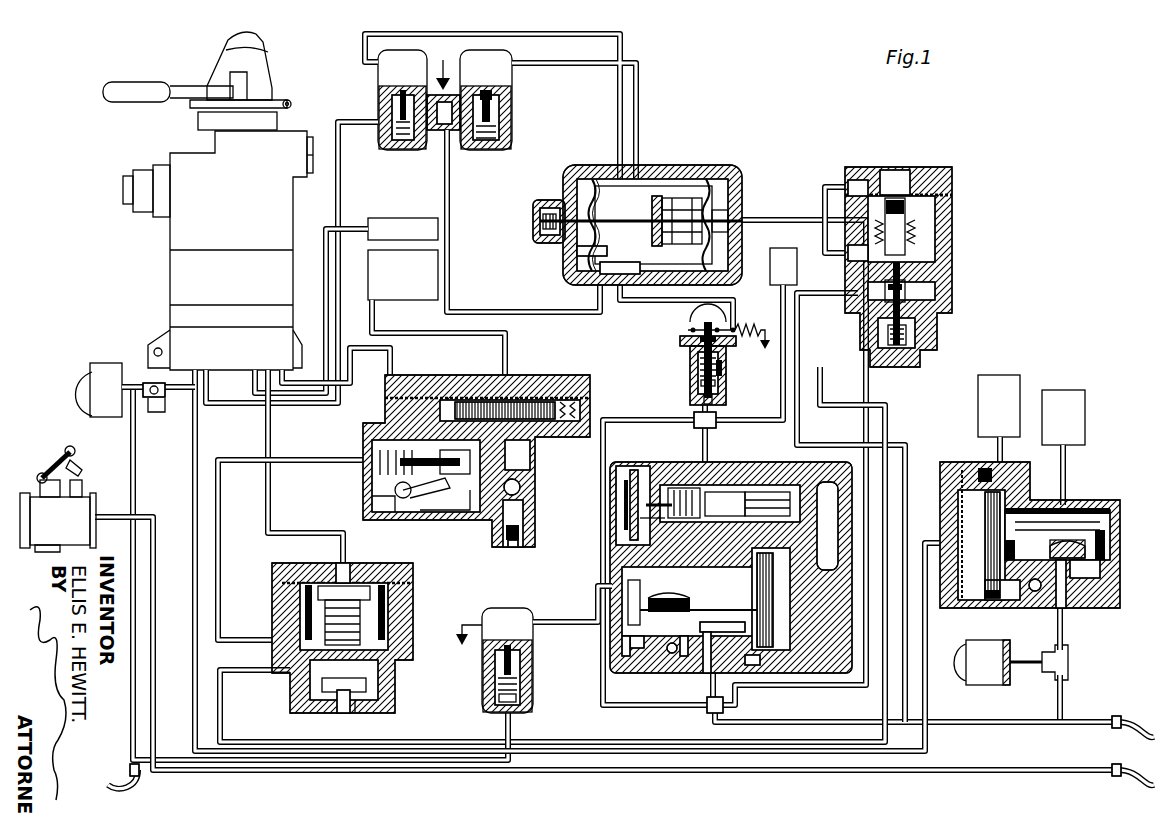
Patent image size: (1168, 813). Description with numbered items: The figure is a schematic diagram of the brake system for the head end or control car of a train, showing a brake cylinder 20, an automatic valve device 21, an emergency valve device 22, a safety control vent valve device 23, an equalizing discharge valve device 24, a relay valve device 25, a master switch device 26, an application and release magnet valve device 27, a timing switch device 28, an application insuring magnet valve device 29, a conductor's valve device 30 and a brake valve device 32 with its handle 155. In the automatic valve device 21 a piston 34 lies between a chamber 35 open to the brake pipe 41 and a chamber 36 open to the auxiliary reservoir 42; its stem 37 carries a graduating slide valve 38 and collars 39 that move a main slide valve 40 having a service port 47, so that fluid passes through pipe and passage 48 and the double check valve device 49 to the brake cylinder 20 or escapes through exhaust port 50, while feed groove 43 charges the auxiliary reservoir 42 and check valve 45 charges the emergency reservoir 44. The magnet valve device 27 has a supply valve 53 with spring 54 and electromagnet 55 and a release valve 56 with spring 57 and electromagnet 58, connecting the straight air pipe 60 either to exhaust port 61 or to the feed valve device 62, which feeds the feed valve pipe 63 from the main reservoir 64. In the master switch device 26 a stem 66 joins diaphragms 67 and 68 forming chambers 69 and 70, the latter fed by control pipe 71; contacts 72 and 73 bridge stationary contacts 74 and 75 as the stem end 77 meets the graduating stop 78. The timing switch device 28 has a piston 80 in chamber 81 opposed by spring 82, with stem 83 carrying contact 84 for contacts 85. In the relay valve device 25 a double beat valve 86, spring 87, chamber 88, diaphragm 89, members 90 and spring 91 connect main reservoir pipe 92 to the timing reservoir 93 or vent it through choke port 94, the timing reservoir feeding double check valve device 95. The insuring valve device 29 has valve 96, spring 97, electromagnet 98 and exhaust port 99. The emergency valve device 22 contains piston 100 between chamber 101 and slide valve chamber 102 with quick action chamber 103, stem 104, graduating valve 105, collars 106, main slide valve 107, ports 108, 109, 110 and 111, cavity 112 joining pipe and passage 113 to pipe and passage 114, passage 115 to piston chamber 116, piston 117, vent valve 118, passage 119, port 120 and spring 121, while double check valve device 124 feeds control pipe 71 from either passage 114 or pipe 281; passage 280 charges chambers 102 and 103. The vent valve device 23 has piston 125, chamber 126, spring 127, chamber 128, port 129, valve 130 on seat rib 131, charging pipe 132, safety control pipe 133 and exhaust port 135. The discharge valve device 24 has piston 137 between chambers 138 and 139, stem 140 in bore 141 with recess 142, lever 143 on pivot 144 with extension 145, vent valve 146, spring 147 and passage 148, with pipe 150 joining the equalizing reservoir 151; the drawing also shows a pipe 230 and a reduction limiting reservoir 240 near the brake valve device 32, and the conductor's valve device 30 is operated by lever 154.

The brake cylinder 20 is at (966, 658).
The automatic valve device 21 is at (1127, 511).
The emergency valve device 22 is at (735, 458).
The safety control vent valve device 23 is at (420, 612).
The equalizing discharge valve device 24 is at (474, 556).
The relay valve device 25 is at (958, 264).
The master switch device 26 is at (710, 155).
The application and release magnet valve device 27 is at (528, 58).
The timing switch device 28 is at (736, 392).
The application insuring magnet valve device 29 is at (520, 608).
The conductor's valve device 30 is at (58, 525).
The brake valve device 32 is at (170, 238).
The piston 34 is at (985, 596).
The chamber 35 is at (958, 515).
The chamber 36 is at (1060, 508).
The stem 37 is at (985, 550).
The graduating slide valve 38 is at (1085, 548).
The collars 39 is at (1020, 508).
The main slide valve 40 is at (1100, 568).
The brake pipe 41 is at (166, 560).
The auxiliary reservoir 42 is at (1064, 390).
The feed groove 43 is at (1005, 598).
The emergency reservoir 44 is at (1000, 375).
The spring loaded check valve 45 is at (978, 476).
The service port 47 is at (1100, 580).
The pipe and passage 48 is at (1062, 608).
The double check valve device 49 is at (1068, 664).
The exhaust port 50 is at (1035, 592).
The supply valve 53 is at (392, 112).
The spring 54 is at (392, 138).
The electromagnet 55 is at (405, 50).
The release valve 56 is at (500, 95).
The spring 57 is at (500, 132).
The electromagnet 58 is at (487, 50).
The straight air pipe 60 is at (490, 308).
The exhaust port 61 is at (496, 108).
The feed valve device 62 is at (145, 382).
The feed valve pipe 63 is at (341, 178).
The main reservoir 64 is at (92, 370).
The stem 66 is at (682, 219).
The flexible diaphragm 67 is at (594, 179).
The flexible diaphragm 68 is at (720, 180).
The chamber 69 is at (566, 190).
The chamber 70 is at (742, 190).
The control pipe 71 is at (795, 218).
The contact member 72 is at (703, 185).
The contact member 73 is at (645, 272).
The stationary contacts 74 is at (657, 196).
The stationary contacts 75 is at (633, 300).
The end 77 is at (577, 256).
The graduating stop 78 is at (562, 200).
The piston 80 is at (700, 384).
The chamber 81 is at (704, 398).
The spring 82 is at (698, 366).
The stem 83 is at (722, 368).
The contact 84 is at (694, 324).
The stationary contacts 85 is at (700, 339).
The double beat valve 86 is at (935, 290).
The spring 87 is at (915, 332).
The chamber 88 is at (900, 170).
The diaphragm 89 is at (905, 200).
The members 90 is at (905, 206).
The spring 91 is at (915, 236).
The main reservoir pipe 92 is at (885, 390).
The timing reservoir 93 is at (770, 292).
The choke port 94 is at (826, 254).
The double check valve device 95 is at (694, 425).
The valve 96 is at (520, 680).
The spring 97 is at (520, 698).
The electromagnet 98 is at (528, 625).
The exhaust port 99 is at (520, 660).
The piston 100 is at (825, 652).
The chamber 101 is at (795, 620).
The slide valve chamber 102 is at (722, 568).
The quick action chamber 103 is at (814, 480).
The stem 104 is at (672, 568).
The graduating valve 105 is at (655, 566).
The collars 106 is at (760, 580).
The main slide valve 107 is at (690, 612).
The port 108 is at (682, 596).
The port 109 is at (675, 652).
The exhaust port 110 is at (684, 656).
The port 111 is at (640, 642).
The cavity 112 is at (745, 627).
The pipe and passage 113 is at (742, 660).
The pipe and passage 114 is at (700, 680).
The passage 115 is at (626, 656).
The piston chamber 116 is at (625, 505).
The piston 117 is at (632, 525).
The vent valve 118 is at (680, 486).
The passage 119 is at (767, 508).
The port 120 is at (634, 468).
The spring 121 is at (725, 508).
The double check valve device 124 is at (707, 705).
The piston 125 is at (272, 608).
The chamber 126 is at (372, 552).
The spring 127 is at (335, 562).
The chamber 128 is at (388, 638).
The port 129 is at (388, 592).
The valve 130 is at (366, 682).
The seat rib 131 is at (356, 713).
The charging pipe 132 is at (222, 503).
The safety control pipe 133 is at (272, 503).
The exhaust port 135 is at (340, 710).
The piston 137 is at (572, 400).
The chamber 138 is at (528, 400).
The chamber 139 is at (512, 547).
The stem 140 is at (530, 465).
The bore 141 is at (522, 545).
The recess 142 is at (520, 487).
The lever 143 is at (450, 510).
The pivot 144 is at (395, 490).
The extension 145 is at (408, 448).
The vent valve 146 is at (405, 500).
The spring 147 is at (372, 458).
The passage 148 is at (378, 400).
The pipe 150 is at (372, 313).
The equalizing reservoir 151 is at (438, 262).
The lever 154 is at (66, 452).
The brake valve handle 155 is at (143, 88).
The pipe 230 is at (328, 268).
The reduction limiting reservoir 240 is at (404, 218).
The passage 280 is at (826, 526).
The pipe 281 is at (192, 487).